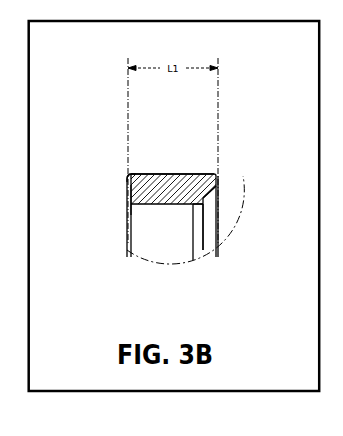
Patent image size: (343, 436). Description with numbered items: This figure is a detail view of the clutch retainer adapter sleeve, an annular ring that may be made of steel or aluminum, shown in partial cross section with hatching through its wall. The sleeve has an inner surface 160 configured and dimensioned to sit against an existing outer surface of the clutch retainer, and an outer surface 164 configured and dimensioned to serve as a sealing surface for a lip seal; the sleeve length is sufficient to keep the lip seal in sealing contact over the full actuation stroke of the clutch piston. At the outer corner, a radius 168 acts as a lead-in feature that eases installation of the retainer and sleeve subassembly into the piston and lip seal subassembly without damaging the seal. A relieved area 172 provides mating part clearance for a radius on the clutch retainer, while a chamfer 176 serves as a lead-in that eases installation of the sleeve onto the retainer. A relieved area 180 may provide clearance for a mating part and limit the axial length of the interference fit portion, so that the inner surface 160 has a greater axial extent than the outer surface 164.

The inner surface 160 is at (157, 203).
The outer surface 164 is at (168, 173).
The radius 168 is at (127, 175).
The relieved area 180 is at (130, 199).
The relieved area 172 is at (206, 197).
The chamfer 176 is at (199, 203).